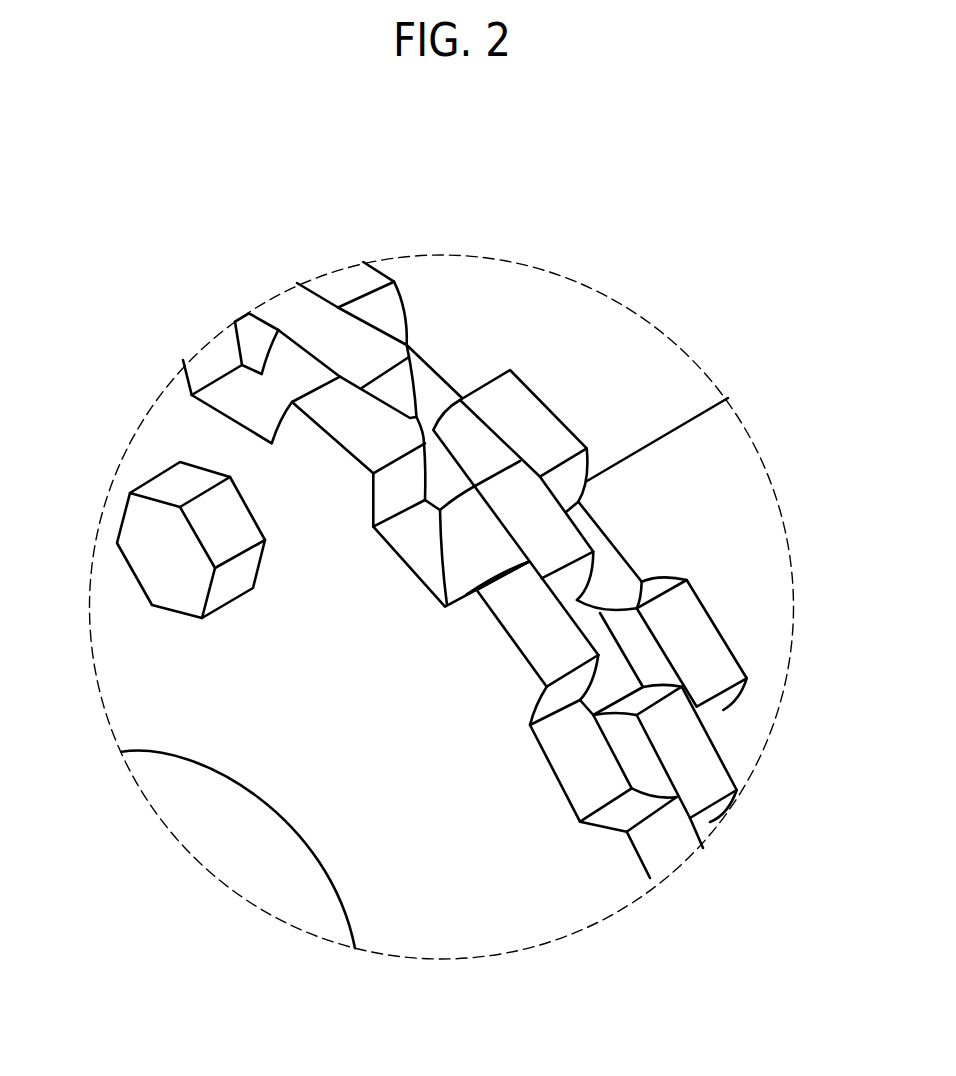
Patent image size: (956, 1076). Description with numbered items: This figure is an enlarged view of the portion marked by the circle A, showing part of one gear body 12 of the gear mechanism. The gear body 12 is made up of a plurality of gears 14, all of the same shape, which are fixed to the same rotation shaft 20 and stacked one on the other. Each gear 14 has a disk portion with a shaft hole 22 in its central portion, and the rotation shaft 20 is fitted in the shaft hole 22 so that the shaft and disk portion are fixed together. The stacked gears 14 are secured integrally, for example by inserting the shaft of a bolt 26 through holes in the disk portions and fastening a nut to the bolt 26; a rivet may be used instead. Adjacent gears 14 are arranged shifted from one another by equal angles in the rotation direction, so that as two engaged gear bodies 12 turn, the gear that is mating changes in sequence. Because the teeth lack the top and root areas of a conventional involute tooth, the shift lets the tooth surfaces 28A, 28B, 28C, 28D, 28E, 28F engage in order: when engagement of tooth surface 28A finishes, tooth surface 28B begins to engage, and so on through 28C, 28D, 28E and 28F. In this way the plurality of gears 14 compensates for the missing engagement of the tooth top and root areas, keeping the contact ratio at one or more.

The gear body 12 is at (723, 610).
The gear 14 is at (350, 413).
The rotation shaft 20 is at (682, 450).
The shaft hole 22 is at (283, 818).
The bolt 26 is at (168, 553).
The tooth surface 28A is at (558, 700).
The tooth surface 28B is at (577, 600).
The tooth surface 28C is at (592, 520).
The tooth surface 28D is at (395, 503).
The tooth surface 28E is at (395, 387).
The tooth surface 28F is at (383, 314).
The circle A is at (537, 253).